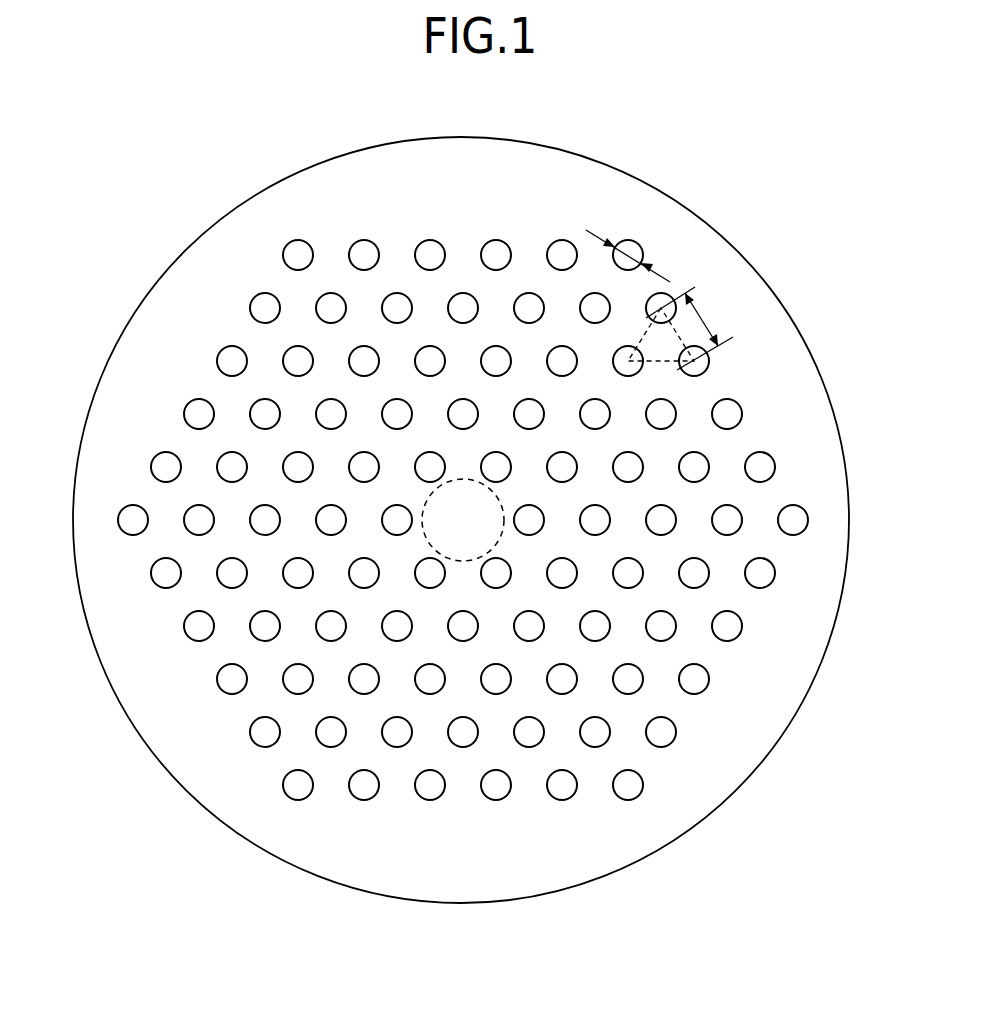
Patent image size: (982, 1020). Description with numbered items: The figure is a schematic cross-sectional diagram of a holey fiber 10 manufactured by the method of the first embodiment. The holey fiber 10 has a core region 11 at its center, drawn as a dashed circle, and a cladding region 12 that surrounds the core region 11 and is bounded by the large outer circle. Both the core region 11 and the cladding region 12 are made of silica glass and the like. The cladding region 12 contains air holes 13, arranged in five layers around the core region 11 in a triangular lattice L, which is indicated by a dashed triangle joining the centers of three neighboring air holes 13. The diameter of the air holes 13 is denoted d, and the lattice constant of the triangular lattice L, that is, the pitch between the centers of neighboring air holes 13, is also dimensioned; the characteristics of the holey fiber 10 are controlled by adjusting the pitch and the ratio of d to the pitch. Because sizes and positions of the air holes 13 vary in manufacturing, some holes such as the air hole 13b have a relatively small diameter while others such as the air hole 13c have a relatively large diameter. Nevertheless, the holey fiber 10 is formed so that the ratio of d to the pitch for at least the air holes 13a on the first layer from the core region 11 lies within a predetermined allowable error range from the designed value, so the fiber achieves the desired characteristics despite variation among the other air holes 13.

The holey fiber 10 is at (466, 559).
The core region 11 is at (470, 558).
The cladding region 12 is at (707, 788).
The air holes 13 is at (806, 511).
The air hole on first layer 13a is at (433, 588).
The air hole having relatively small diameter 13b is at (365, 694).
The air hole having relatively large diameter 13c is at (256, 533).
The diameter of air holes d is at (628, 250).
The triangular lattice L is at (661, 365).